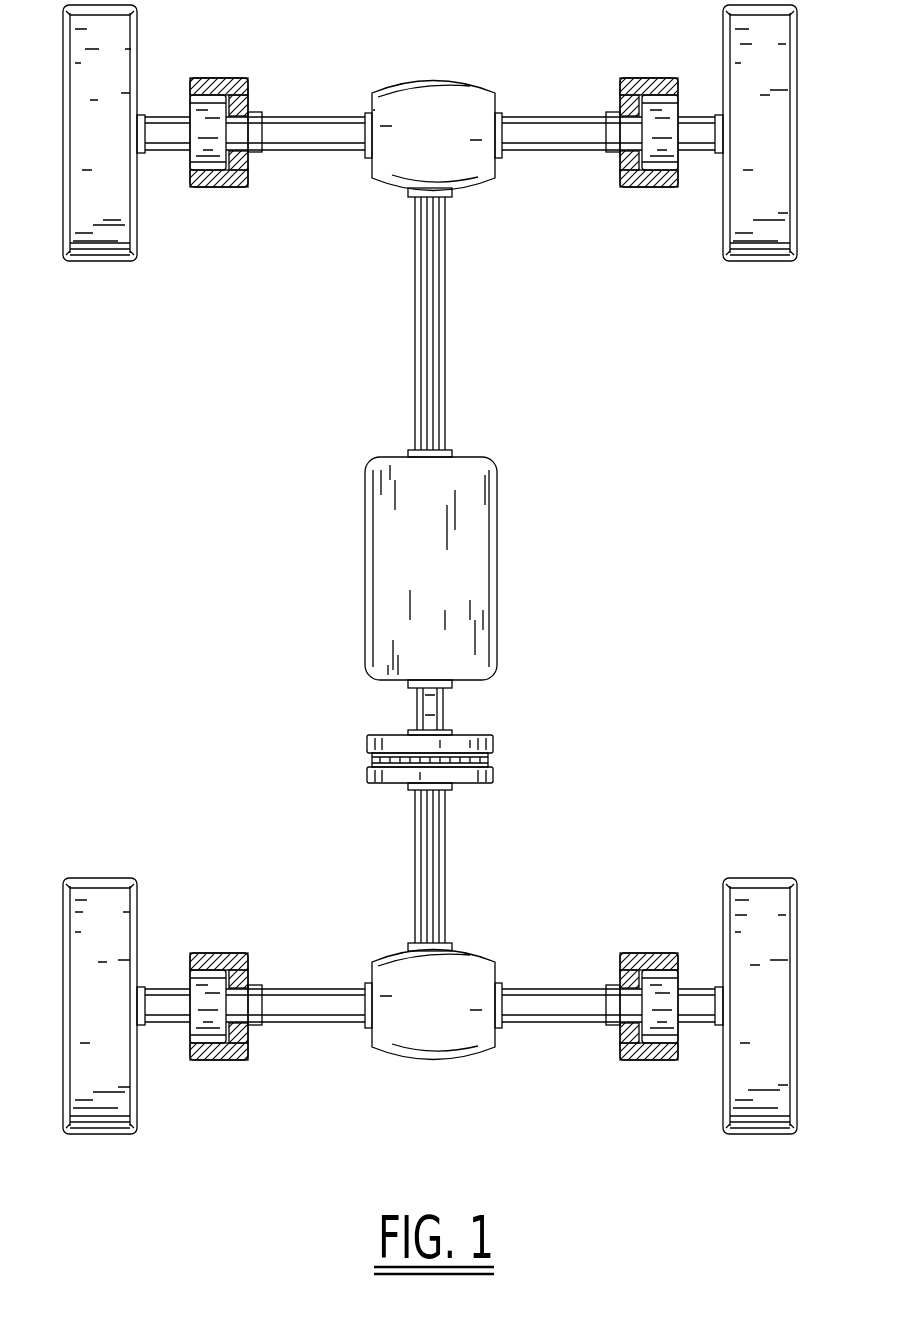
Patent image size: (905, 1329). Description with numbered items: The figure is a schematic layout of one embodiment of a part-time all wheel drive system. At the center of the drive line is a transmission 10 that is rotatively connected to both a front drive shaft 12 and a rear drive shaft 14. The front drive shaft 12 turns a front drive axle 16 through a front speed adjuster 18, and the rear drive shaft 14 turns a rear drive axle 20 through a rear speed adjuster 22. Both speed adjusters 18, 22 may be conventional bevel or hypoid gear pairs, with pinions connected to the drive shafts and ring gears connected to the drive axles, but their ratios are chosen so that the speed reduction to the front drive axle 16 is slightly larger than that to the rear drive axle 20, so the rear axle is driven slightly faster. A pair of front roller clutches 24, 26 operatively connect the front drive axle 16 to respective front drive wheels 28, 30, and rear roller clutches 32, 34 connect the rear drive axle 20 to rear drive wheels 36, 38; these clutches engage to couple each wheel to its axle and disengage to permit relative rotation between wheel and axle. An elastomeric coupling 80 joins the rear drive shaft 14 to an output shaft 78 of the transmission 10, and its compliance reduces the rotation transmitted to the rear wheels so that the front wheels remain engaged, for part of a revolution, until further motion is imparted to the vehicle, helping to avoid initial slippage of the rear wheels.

The transmission 10 is at (411, 586).
The front drive shaft 12 is at (437, 341).
The rear drive shaft 14 is at (438, 872).
The front drive axle 16 is at (343, 152).
The front speed adjuster 18 is at (411, 152).
The rear drive axle 20 is at (312, 1024).
The rear speed adjuster 22 is at (411, 1024).
The front roller clutch 24 is at (245, 78).
The front roller clutch 26 is at (622, 78).
The front drive wheel 28 is at (82, 151).
The front drive wheel 30 is at (742, 151).
The rear roller clutch 32 is at (245, 953).
The rear roller clutch 34 is at (620, 953).
The rear drive wheel 36 is at (82, 1024).
The rear drive wheel 38 is at (742, 1024).
The output shaft 78 is at (440, 708).
The elastomeric coupling 80 is at (495, 745).